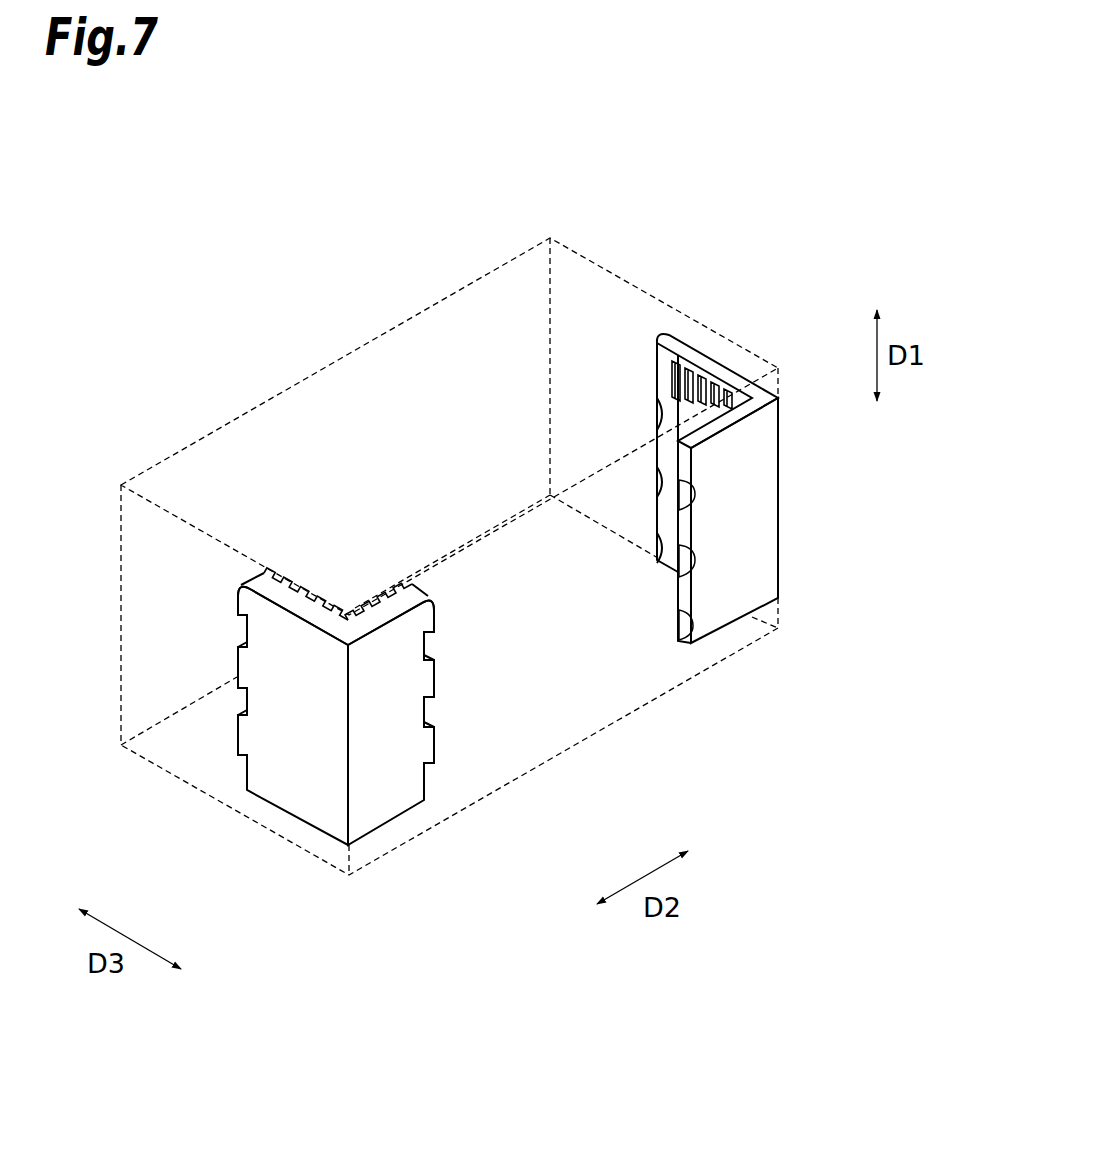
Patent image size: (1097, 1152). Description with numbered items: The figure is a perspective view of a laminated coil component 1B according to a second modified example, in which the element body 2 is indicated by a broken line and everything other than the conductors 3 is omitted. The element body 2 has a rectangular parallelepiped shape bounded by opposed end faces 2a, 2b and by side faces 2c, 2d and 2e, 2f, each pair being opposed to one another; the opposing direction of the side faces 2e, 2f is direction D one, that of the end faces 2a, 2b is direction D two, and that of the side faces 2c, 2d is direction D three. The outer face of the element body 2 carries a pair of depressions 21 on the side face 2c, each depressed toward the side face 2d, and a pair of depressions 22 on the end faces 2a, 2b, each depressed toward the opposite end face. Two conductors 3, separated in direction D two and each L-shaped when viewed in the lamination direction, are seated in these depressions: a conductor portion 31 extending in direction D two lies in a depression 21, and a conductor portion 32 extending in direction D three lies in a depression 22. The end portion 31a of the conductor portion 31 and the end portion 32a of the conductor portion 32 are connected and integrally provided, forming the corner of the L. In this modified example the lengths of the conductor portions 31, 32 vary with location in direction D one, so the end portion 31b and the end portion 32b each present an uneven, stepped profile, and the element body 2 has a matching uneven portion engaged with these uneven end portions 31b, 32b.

The laminated coil component 1B is at (642, 176).
The element body 2 is at (490, 266).
The end face 2a is at (187, 760).
The end face 2b is at (628, 327).
The side face 2c is at (592, 675).
The side face 2d is at (378, 380).
The side face 2e is at (287, 463).
The side face 2f is at (550, 725).
The conductor 3 is at (443, 940).
The depression 21 is at (406, 600).
The depression 22 is at (281, 587).
The conductor portion 31 is at (396, 792).
The conductor portion 32 is at (344, 723).
The end portion 31a is at (549, 652).
The end portion 32a is at (314, 800).
The end portion 31b is at (435, 791).
The end portion 32b is at (241, 770).